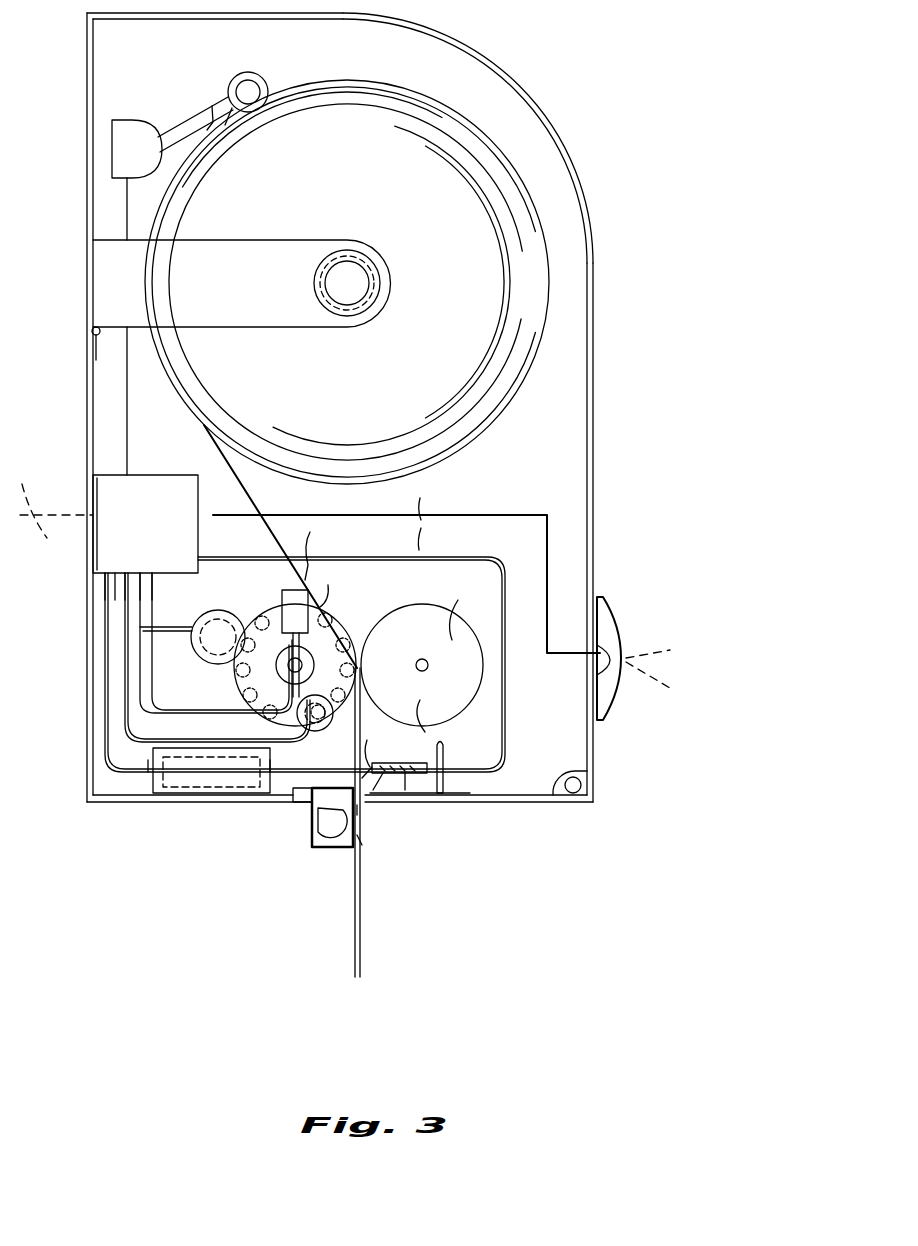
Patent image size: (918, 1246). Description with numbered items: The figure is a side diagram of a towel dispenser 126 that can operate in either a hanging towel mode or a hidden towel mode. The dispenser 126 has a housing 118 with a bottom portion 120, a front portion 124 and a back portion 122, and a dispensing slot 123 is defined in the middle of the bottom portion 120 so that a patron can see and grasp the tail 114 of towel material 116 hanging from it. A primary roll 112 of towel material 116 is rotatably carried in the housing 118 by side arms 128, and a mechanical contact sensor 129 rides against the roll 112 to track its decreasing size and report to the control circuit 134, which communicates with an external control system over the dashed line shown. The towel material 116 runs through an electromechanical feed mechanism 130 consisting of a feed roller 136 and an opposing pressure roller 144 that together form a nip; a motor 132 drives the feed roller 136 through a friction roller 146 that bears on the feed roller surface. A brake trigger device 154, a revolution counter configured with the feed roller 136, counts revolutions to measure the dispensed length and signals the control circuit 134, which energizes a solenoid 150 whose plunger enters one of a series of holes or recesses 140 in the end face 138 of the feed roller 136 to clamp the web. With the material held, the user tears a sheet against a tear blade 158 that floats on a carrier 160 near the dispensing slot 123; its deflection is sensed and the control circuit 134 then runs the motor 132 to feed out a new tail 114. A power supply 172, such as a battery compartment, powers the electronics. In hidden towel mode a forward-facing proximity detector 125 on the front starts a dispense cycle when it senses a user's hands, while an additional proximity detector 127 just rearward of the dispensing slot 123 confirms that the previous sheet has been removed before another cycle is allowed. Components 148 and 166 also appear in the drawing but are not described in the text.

The primary roll 112 is at (545, 378).
The tail 114 is at (372, 958).
The towel material 116 is at (322, 138).
The housing 118 is at (172, 8).
The bottom portion 120 is at (95, 805).
The back portion 122 is at (87, 405).
The dispensing slot 123 is at (360, 835).
The front portion 124 is at (593, 345).
The proximity detector 125 is at (620, 652).
The dispenser 126 is at (536, 104).
The additional proximity detector 127 is at (318, 845).
The side arms 128 is at (120, 287).
The mechanical contact sensor 129 is at (118, 158).
The feed mechanism 130 is at (480, 550).
The motor 132 is at (236, 618).
The control circuit 134 is at (165, 492).
The feed roller 136 is at (212, 663).
The end face 138 is at (330, 610).
The holes or recesses 140 is at (358, 633).
The pressure roller 144 is at (483, 611).
The friction roller 146 is at (297, 618).
The pinion gear 148 is at (260, 702).
The solenoid 150 is at (356, 759).
The brake trigger device 154 is at (336, 552).
The tear blade 158 is at (425, 740).
The carrier 160 is at (357, 810).
The spring 166 is at (449, 706).
The power supply 172 is at (227, 758).